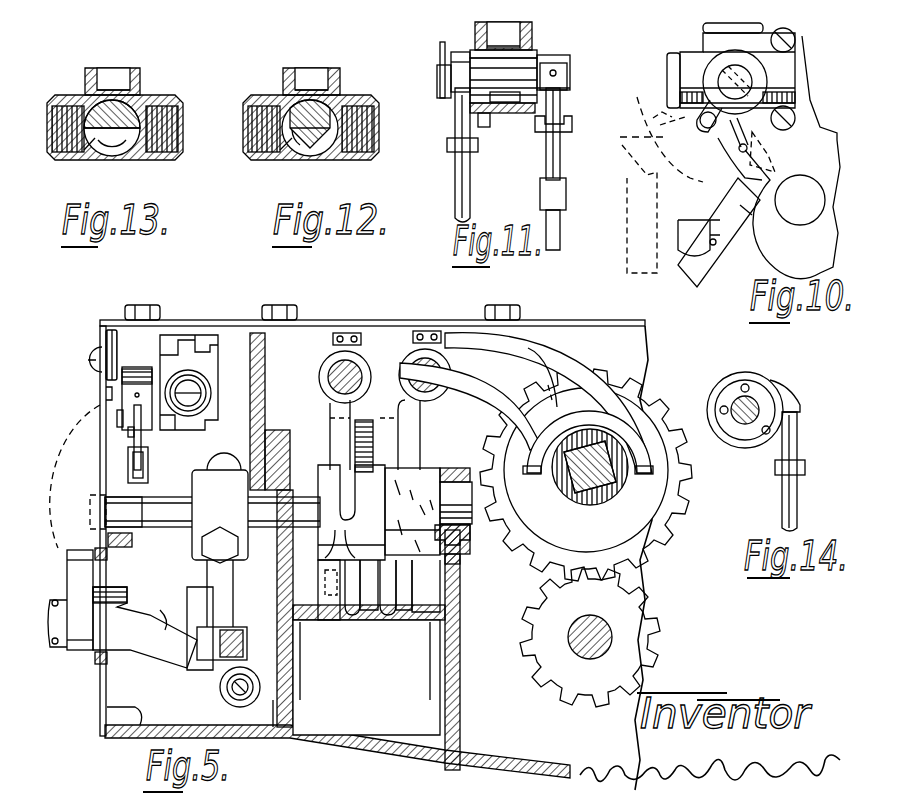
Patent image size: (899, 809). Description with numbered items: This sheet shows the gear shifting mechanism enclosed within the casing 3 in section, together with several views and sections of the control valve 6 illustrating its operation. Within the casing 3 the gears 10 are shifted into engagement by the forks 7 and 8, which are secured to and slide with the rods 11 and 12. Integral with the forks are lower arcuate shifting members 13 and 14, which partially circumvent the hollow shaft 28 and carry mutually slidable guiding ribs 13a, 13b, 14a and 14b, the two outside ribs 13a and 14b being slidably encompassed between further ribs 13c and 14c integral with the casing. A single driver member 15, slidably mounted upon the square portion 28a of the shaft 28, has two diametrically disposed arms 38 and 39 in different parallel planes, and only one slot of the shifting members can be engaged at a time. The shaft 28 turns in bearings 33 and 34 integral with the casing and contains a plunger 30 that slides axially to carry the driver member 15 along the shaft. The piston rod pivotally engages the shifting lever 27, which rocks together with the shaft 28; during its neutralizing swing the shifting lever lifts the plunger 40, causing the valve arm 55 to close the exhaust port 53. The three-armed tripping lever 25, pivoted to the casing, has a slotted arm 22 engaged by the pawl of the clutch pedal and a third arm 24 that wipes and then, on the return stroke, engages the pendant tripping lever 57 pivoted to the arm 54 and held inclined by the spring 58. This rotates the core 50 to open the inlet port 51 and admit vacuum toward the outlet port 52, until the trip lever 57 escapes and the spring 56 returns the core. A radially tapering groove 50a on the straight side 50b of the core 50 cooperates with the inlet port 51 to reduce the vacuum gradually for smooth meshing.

In FIG. 5, the casing 3 is at (380, 322).
In FIG. 13, the valve 6 is at (150, 97).
In FIG. 12, the valve 6 is at (280, 97).
In FIG. 11, the valve 6 is at (532, 52).
In FIG. 10, the valve 6 is at (700, 52).
In FIG. 5, the valve 6 is at (165, 350).
In FIG. 5, the fork 7 is at (490, 351).
In FIG. 5, the fork 8 is at (462, 385).
In FIG. 5, the gears 10 is at (540, 590).
In FIG. 5, the rod 11 is at (328, 364).
In FIG. 5, the rod 12 is at (405, 366).
In FIG. 5, the shifting member 13 is at (330, 405).
In FIG. 5, the guiding rib 13a is at (300, 620).
In FIG. 5, the guiding rib 13b is at (358, 622).
In FIG. 5, the rib 13c is at (362, 661).
In FIG. 5, the shifting member 14 is at (398, 434).
In FIG. 5, the guiding rib 14a is at (380, 622).
In FIG. 5, the guiding rib 14b is at (405, 622).
In FIG. 5, the rib 14c is at (422, 622).
In FIG. 5, the driver member 15 is at (325, 468).
In FIG. 5, the slotted arm 22 is at (67, 571).
In FIG. 11, the third arm 24 is at (566, 196).
In FIG. 10, the third arm 24 is at (710, 275).
In FIG. 5, the third arm 24 is at (148, 471).
In FIG. 5, the tripping lever 25 is at (160, 655).
In FIG. 5, the shifting lever 27 is at (207, 572).
In FIG. 5, the shaft 28 is at (472, 513).
In FIG. 5, the square portion 28a is at (405, 485).
In FIG. 5, the plunger 30 is at (172, 528).
In FIG. 5, the bearing 33 is at (118, 493).
In FIG. 5, the bearing 34 is at (470, 545).
In FIG. 5, the upper arm 38 is at (364, 420).
In FIG. 5, the lower arm 39 is at (330, 572).
In FIG. 11, the plunger 40 is at (455, 125).
In FIG. 14, the plunger 40 is at (798, 490).
In FIG. 13, the core 50 is at (104, 156).
In FIG. 12, the core 50 is at (326, 104).
In FIG. 11, the core 50 is at (535, 58).
In FIG. 13, the radially tapering groove 50a is at (88, 156).
In FIG. 12, the radially tapering groove 50a is at (284, 156).
In FIG. 11, the radially tapering groove 50a is at (502, 113).
In FIG. 13, the straight side 50b is at (117, 137).
In FIG. 12, the straight side 50b is at (311, 139).
In FIG. 13, the inlet port 51 is at (52, 128).
In FIG. 12, the inlet port 51 is at (250, 132).
In FIG. 13, the outlet port 52 is at (178, 123).
In FIG. 12, the outlet port 52 is at (375, 122).
In FIG. 13, the exhaust port 53 is at (113, 75).
In FIG. 12, the exhaust port 53 is at (311, 75).
In FIG. 11, the exhaust port 53 is at (503, 28).
In FIG. 11, the arm 54 is at (567, 68).
In FIG. 10, the arm 54 is at (700, 128).
In FIG. 5, the arm 54 is at (122, 407).
In FIG. 11, the arm 55 is at (440, 84).
In FIG. 14, the arm 55 is at (770, 382).
In FIG. 11, the spring 56 is at (440, 54).
In FIG. 11, the tripping lever 57 is at (560, 157).
In FIG. 10, the tripping lever 57 is at (738, 160).
In FIG. 5, the tripping lever 57 is at (142, 440).
In FIG. 11, the spring 58 is at (572, 127).
In FIG. 10, the spring 58 is at (745, 136).
In FIG. 5, the spring 58 is at (130, 437).